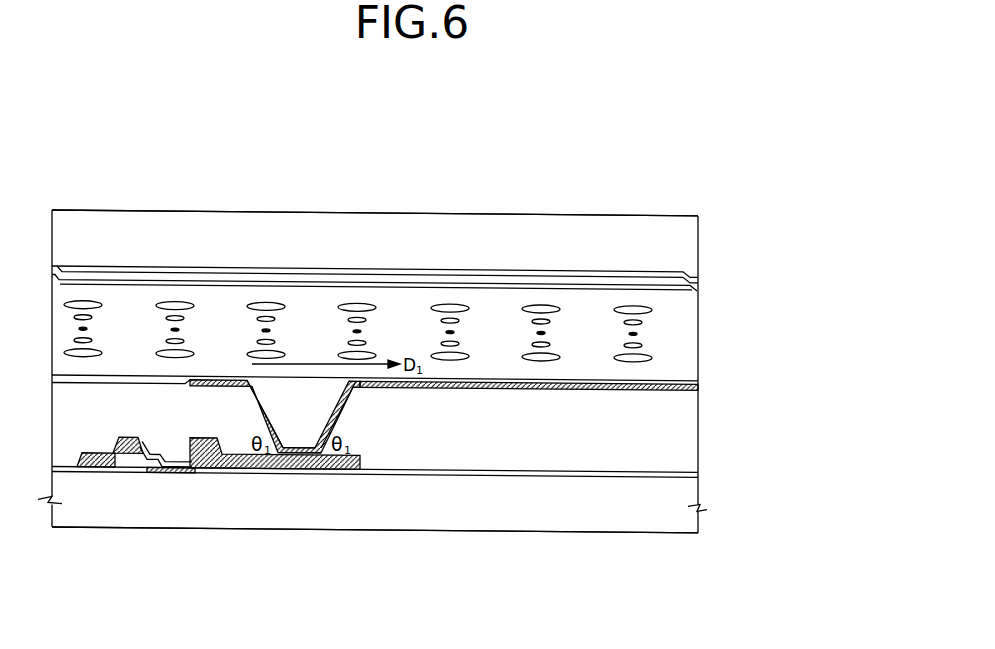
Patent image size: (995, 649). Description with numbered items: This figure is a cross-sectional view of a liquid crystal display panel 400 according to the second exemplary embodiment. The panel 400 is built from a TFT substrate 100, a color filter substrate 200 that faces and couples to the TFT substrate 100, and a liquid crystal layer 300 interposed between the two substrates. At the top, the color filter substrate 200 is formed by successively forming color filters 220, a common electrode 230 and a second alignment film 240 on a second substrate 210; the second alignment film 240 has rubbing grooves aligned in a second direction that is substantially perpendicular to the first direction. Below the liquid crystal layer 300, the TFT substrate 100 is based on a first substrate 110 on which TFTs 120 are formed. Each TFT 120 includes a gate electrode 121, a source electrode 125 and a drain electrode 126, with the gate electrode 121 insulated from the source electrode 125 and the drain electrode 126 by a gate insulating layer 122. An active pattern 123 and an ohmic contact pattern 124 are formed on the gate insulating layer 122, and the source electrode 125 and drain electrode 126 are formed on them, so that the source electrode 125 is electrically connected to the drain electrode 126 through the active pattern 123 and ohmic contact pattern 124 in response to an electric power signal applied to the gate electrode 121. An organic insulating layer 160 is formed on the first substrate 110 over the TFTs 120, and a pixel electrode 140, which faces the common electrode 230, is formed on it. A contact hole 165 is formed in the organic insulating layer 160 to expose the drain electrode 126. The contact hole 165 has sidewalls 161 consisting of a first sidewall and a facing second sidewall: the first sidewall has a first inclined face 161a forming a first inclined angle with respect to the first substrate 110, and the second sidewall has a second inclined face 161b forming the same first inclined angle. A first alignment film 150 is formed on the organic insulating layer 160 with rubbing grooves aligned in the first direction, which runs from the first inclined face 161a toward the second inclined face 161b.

The liquid crystal display panel 400 is at (424, 111).
The color filter substrate 200 is at (410, 225).
The second substrate 210 is at (588, 228).
The color filters 220 is at (521, 272).
The common electrode 230 is at (437, 271).
The second alignment film 240 is at (347, 285).
The liquid crystal layer 300 is at (702, 339).
The TFT substrate 100 is at (408, 464).
The first substrate 110 is at (565, 508).
The TFT 120 is at (202, 526).
The gate electrode 121 is at (180, 474).
The gate insulating layer 122 is at (140, 474).
The active pattern 123 is at (128, 474).
The ohmic contact pattern 124 is at (212, 474).
The source electrode 125 is at (83, 474).
The drain electrode 126 is at (319, 512).
The pixel electrode 140 is at (497, 476).
The first alignment film 150 is at (642, 387).
The organic insulating layer 160 is at (418, 458).
The sidewalls 161 is at (375, 383).
The first inclined face 161a is at (261, 409).
The second inclined face 161b is at (341, 412).
The contact hole 165 is at (314, 403).